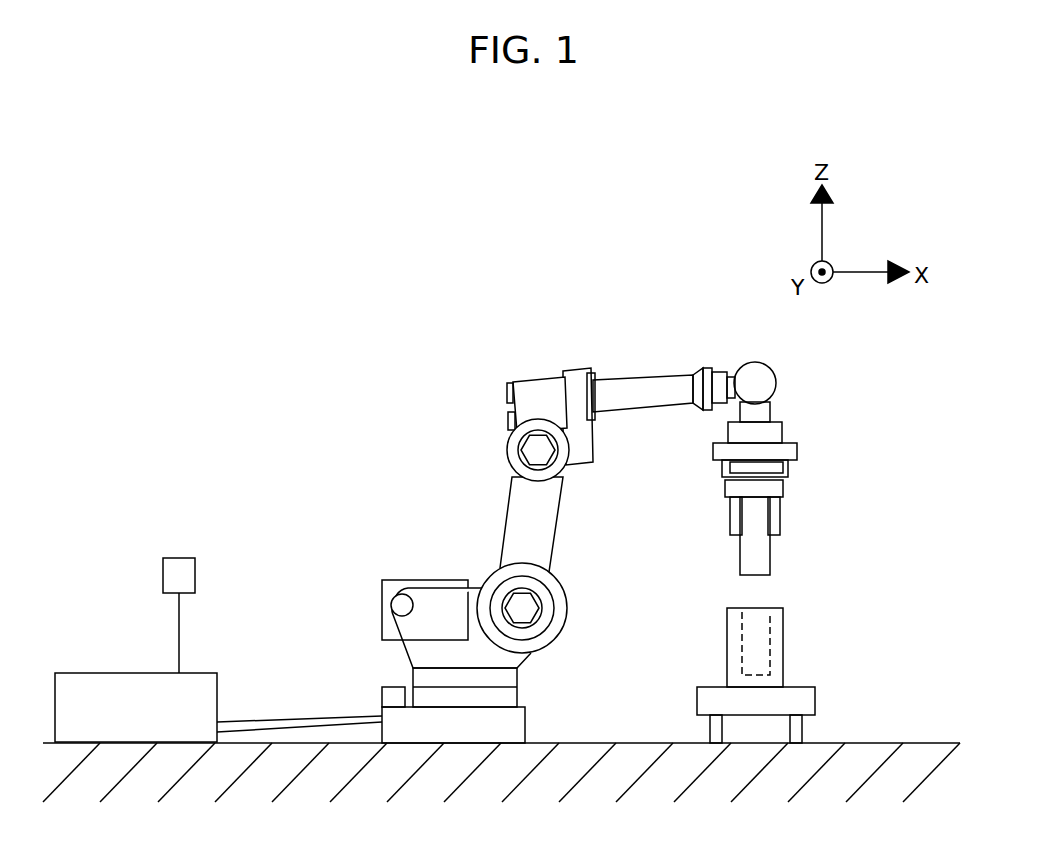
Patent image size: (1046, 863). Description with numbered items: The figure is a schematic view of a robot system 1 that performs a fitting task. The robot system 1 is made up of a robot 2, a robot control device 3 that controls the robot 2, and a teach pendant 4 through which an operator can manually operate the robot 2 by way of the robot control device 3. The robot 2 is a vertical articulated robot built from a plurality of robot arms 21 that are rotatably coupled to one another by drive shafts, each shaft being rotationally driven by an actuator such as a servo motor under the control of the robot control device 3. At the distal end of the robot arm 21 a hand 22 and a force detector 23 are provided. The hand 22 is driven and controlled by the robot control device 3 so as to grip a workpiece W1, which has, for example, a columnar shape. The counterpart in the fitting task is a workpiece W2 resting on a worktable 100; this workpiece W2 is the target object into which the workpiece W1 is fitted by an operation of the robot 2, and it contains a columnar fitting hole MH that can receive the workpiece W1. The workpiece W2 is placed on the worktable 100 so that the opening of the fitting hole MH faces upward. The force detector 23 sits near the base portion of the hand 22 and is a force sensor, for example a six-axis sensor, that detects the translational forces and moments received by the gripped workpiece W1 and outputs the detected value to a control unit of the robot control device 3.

The robot system 1 is at (375, 168).
The robot 2 is at (523, 330).
The robot control device 3 is at (100, 673).
The teach pendant 4 is at (179, 558).
The robot arm 21 is at (645, 376).
The hand 22 is at (782, 515).
The force detector 23 is at (762, 467).
The workpiece W1 is at (770, 558).
The workpiece W2 is at (784, 647).
The fitting hole MH is at (760, 608).
The worktable 100 is at (815, 700).